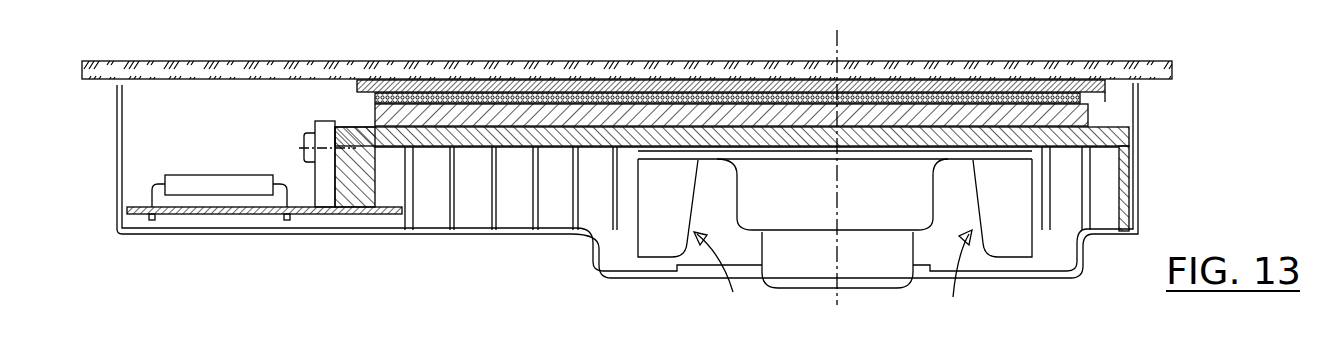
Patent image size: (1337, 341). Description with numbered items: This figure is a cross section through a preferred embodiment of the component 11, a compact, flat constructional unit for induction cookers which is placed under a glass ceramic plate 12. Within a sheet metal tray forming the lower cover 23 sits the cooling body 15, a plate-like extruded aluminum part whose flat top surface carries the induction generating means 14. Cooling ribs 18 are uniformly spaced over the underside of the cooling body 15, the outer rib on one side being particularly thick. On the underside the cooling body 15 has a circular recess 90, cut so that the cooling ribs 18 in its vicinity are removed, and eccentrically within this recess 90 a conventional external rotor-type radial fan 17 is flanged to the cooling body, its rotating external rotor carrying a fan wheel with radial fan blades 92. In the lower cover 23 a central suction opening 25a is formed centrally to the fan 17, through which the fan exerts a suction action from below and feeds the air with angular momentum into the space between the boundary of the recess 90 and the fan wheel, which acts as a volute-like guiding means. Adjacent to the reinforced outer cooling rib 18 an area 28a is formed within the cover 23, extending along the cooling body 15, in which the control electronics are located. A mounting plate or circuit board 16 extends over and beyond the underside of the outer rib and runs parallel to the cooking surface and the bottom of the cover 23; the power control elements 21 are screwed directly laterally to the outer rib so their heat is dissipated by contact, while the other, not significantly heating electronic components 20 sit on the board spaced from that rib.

The component 11 is at (1026, 45).
The plate 12 is at (848, 74).
The induction generating means 14 is at (1114, 102).
The cooling body 15 is at (1122, 137).
The mounting plate or circuit board 16 is at (189, 215).
The radial fan 17 is at (808, 272).
The cooling ribs 18 is at (364, 207).
The electronic components 20 is at (230, 196).
The power control elements 21 is at (320, 130).
The sheet metal tray (lower cover) 23 is at (142, 236).
The central suction opening 25a is at (932, 268).
The area 28a is at (226, 144).
The recess 90 is at (624, 256).
The radial fan blades 92 is at (1011, 250).